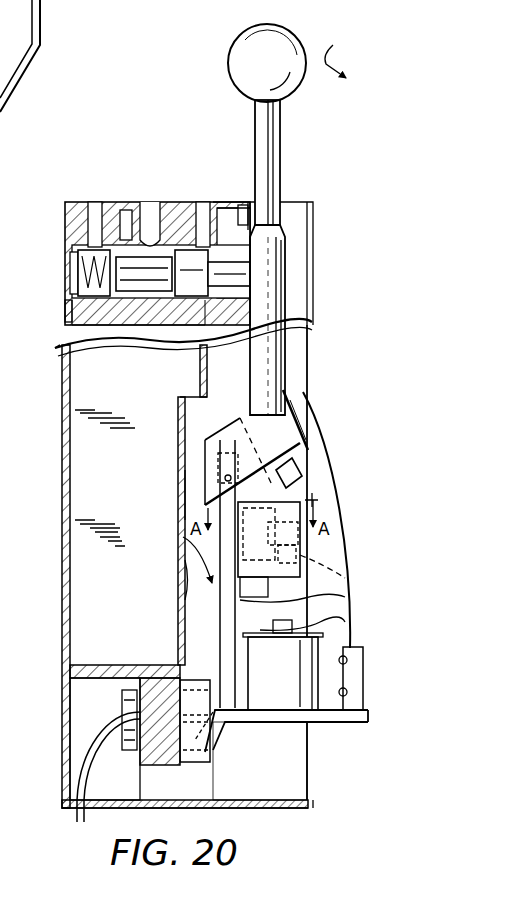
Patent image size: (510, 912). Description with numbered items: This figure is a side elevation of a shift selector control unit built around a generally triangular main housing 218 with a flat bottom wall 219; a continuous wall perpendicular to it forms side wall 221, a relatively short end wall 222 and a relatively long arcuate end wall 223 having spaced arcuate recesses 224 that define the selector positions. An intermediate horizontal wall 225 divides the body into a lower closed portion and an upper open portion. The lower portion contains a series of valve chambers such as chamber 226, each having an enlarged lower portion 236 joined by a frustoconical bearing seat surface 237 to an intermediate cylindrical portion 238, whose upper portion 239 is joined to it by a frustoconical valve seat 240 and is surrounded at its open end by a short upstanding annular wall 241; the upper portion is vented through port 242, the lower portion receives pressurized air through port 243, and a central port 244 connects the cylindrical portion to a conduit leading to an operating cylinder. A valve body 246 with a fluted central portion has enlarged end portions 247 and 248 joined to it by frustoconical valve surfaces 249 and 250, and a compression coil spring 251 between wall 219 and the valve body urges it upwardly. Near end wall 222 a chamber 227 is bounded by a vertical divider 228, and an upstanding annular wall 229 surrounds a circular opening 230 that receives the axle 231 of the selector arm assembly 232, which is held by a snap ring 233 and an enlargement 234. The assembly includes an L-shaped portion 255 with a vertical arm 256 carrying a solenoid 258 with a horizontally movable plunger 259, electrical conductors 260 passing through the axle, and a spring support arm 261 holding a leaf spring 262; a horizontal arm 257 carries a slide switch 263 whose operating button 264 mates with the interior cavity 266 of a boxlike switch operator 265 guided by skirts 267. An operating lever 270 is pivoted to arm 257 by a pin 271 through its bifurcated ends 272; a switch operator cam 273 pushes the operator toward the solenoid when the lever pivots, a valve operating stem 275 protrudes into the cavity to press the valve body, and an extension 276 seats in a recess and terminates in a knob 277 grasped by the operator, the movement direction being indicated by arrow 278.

The main housing 218 is at (197, 808).
The bottom wall 219 is at (62, 503).
The side wall 221 is at (4, 112).
The end wall 222 is at (313, 799).
The arcuate end wall 223 is at (285, 200).
The arcuate recesses 224 is at (310, 203).
The intermediate horizontal wall 225 is at (177, 480).
The valve chamber 226 is at (78, 271).
The chamber 227 is at (72, 752).
The vertical divider 228 is at (135, 638).
The upstanding annular wall 229 is at (175, 663).
The circular opening 230 is at (186, 765).
The axle 231 is at (77, 788).
The selector arm assembly 232 is at (180, 548).
The snap ring 233 is at (133, 760).
The enlargement 234 is at (220, 760).
The enlarged lower portion 236 is at (70, 302).
The frustoconical bearing seat surface 237 is at (83, 203).
The intermediate cylindrical portion 238 is at (93, 217).
The upper portion 239 is at (246, 200).
The frustoconical valve seat 240 is at (126, 202).
The upstanding annular wall 241 is at (245, 167).
The port 242 is at (205, 215).
The port 243 is at (66, 243).
The central port 244 is at (162, 202).
The valve body 246 is at (138, 345).
The upper enlarged end portion 247 is at (205, 365).
The lower enlarged end portion 248 is at (72, 366).
The frustoconical valve surface 249 is at (180, 297).
The frustoconical valve surface 250 is at (95, 293).
The compression coil spring 251 is at (58, 344).
The L-shaped portion 255 is at (238, 728).
The vertical arm 256 is at (313, 722).
The horizontal arm 257 is at (177, 595).
The solenoid 258 is at (281, 643).
The plunger 259 is at (346, 625).
The electrical conductors 260 is at (105, 740).
The spring support arm 261 is at (308, 700).
The leaf spring 262 is at (330, 490).
The slide switch 263 is at (345, 598).
The operating button 264 is at (345, 578).
The switch operator 265 is at (305, 510).
The interior cavity 266 is at (300, 548).
The skirts 267 is at (177, 537).
The operating lever 270 is at (285, 257).
The pin 271 is at (178, 512).
The bifurcated ends 272 is at (236, 422).
The switch operator cam 273 is at (300, 470).
The valve operating stem 275 is at (235, 250).
The extension 276 is at (282, 137).
The knob 277 is at (317, 13).
The direction arrow 278 is at (348, 57).